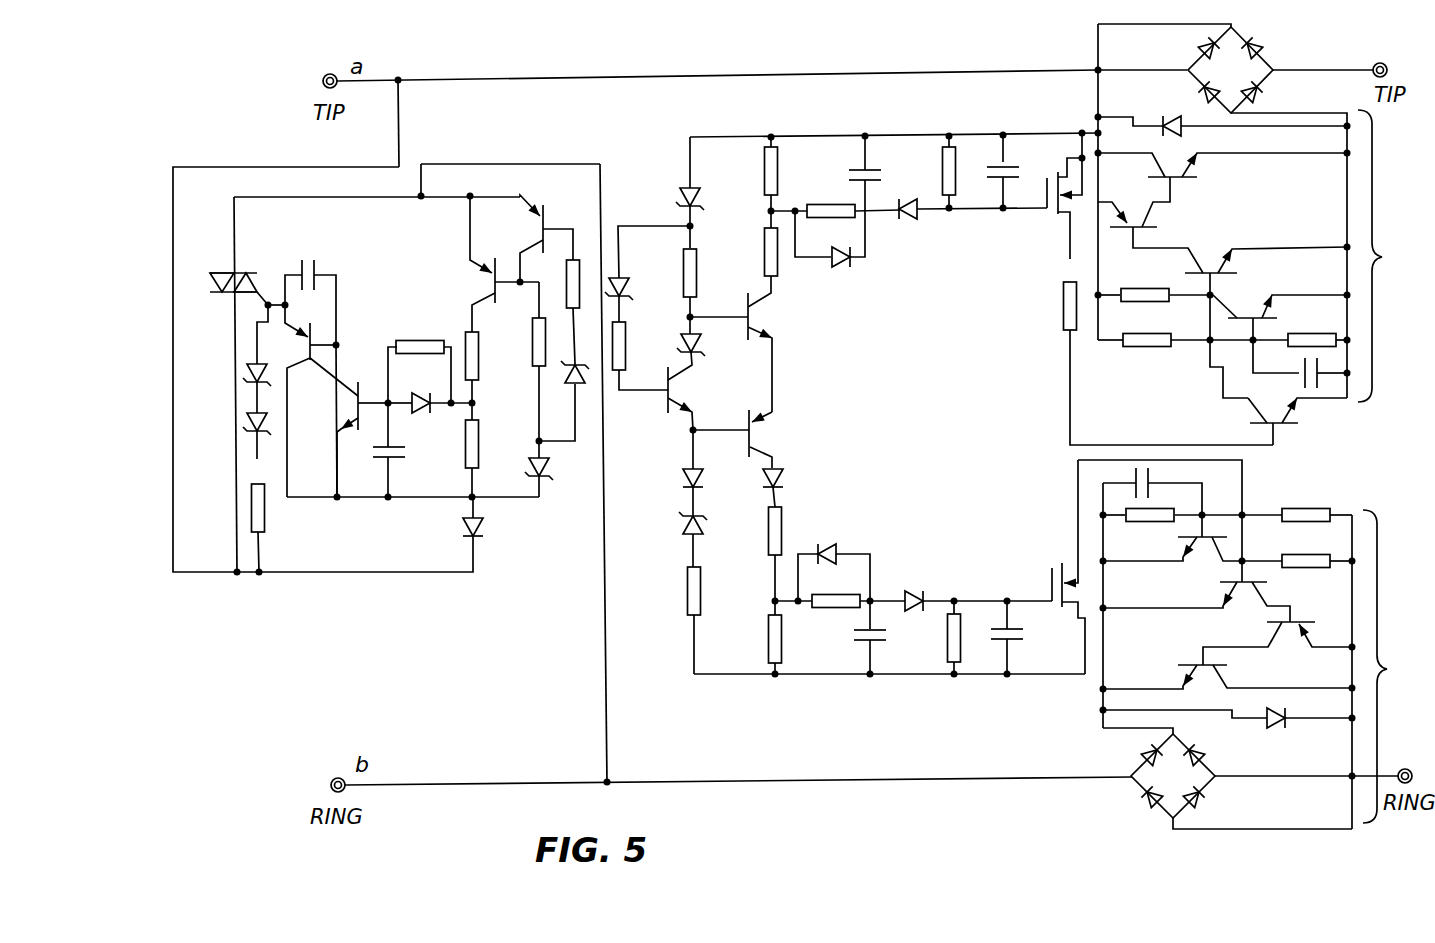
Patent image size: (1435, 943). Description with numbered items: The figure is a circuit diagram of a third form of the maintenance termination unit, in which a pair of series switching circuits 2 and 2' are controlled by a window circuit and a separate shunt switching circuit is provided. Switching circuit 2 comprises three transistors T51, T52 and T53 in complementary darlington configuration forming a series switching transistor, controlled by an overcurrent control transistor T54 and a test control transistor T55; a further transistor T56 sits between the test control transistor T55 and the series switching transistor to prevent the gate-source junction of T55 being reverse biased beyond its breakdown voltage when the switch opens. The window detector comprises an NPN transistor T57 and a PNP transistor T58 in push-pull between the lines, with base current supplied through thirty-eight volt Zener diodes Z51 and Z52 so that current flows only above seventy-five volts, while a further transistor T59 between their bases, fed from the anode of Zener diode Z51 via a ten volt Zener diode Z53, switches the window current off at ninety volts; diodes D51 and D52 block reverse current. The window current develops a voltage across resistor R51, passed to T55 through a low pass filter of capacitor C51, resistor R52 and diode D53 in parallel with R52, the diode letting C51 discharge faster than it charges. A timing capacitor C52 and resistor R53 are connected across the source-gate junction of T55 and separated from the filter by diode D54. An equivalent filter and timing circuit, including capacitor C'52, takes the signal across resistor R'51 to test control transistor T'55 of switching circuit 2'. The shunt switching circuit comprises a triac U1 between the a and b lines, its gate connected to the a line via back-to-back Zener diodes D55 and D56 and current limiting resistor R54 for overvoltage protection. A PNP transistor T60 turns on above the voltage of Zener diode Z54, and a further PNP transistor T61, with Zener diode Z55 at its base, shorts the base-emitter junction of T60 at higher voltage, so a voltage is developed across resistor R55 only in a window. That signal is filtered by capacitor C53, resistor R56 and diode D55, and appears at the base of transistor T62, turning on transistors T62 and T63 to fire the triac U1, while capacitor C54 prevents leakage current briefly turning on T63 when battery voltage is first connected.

The triac U1 is at (220, 282).
The Zener diode D55 is at (250, 374).
The Zener diode D56 is at (250, 422).
The current limiting resistor R54 is at (266, 510).
The capacitor C54 is at (316, 276).
The transistor T62 is at (354, 388).
The transistor T63 is at (332, 400).
The capacitor C53 is at (378, 470).
The resistor R56 is at (420, 341).
The PNP transistor T60 is at (479, 292).
The PNP transistor T61 is at (542, 216).
The resistor R55 is at (480, 450).
The Zener diode Z54 is at (548, 484).
The Zener diode Z55 is at (586, 386).
The Zener diode Z51 is at (680, 198).
The Zener diode Z53 is at (629, 286).
The transistor T59 is at (661, 402).
The resistor R51 is at (766, 152).
The NPN bipolar transistor T57 is at (764, 310).
The PNP transistor T58 is at (764, 446).
The diode D51 is at (786, 480).
The resistor R'51 is at (734, 668).
The diode D52 is at (684, 482).
The Zener diode Z52 is at (682, 546).
The resistor R52 is at (820, 200).
The diode D53 is at (848, 262).
The capacitor C51 is at (866, 168).
The resistor R53 is at (956, 170).
The diode D54 is at (905, 218).
The timing capacitor C52 is at (1006, 168).
The test control transistor T55 is at (1050, 216).
The timing capacitor C'52 is at (1034, 637).
The test control transistor T'55 is at (1011, 567).
The transistor T51 is at (1190, 180).
The transistor T52 is at (1150, 230).
The transistor T53 is at (1194, 276).
The overcurrent control transistor T54 is at (1240, 314).
The transistor T56 is at (1285, 426).
The series switching circuit 2 is at (1379, 256).
The series switching circuit 2' is at (1385, 666).